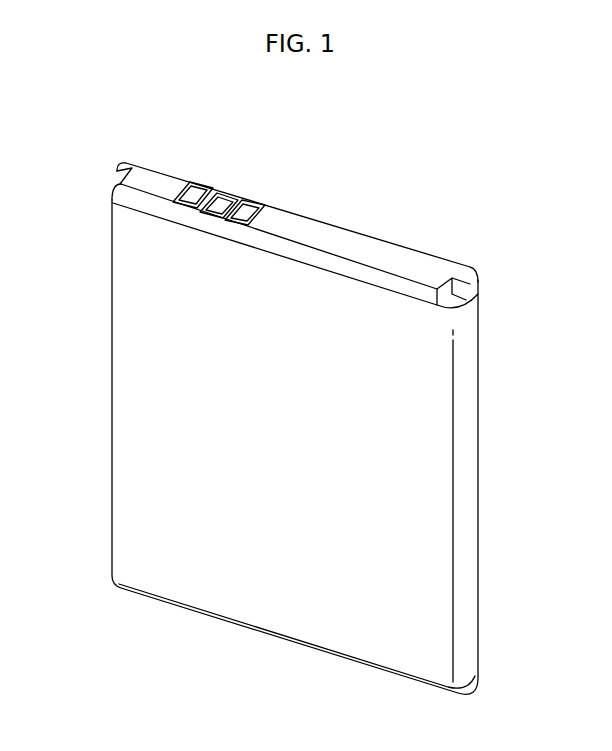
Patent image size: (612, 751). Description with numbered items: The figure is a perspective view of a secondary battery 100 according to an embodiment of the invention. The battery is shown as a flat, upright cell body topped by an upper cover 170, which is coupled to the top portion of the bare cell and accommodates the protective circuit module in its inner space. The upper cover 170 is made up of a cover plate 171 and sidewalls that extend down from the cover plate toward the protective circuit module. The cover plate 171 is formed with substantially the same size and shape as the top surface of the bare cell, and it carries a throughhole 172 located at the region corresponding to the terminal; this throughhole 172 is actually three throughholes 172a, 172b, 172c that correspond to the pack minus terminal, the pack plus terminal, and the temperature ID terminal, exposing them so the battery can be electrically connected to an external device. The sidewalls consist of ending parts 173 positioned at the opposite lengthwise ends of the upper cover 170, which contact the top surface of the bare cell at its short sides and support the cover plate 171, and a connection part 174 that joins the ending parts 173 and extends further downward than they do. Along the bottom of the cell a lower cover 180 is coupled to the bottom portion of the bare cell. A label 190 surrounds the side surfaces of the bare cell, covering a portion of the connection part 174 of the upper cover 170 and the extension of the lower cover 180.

The secondary battery 100 is at (558, 141).
The upper cover 170 is at (282, 190).
The cover plate 171 is at (402, 250).
The throughhole 172 is at (288, 108).
The throughhole 172a is at (190, 183).
The throughhole 172b is at (233, 197).
The throughhole 172c is at (258, 201).
The ending parts 173 is at (119, 172).
The connection part 174 is at (138, 204).
The lower cover 180 is at (481, 690).
The label 190 is at (468, 432).